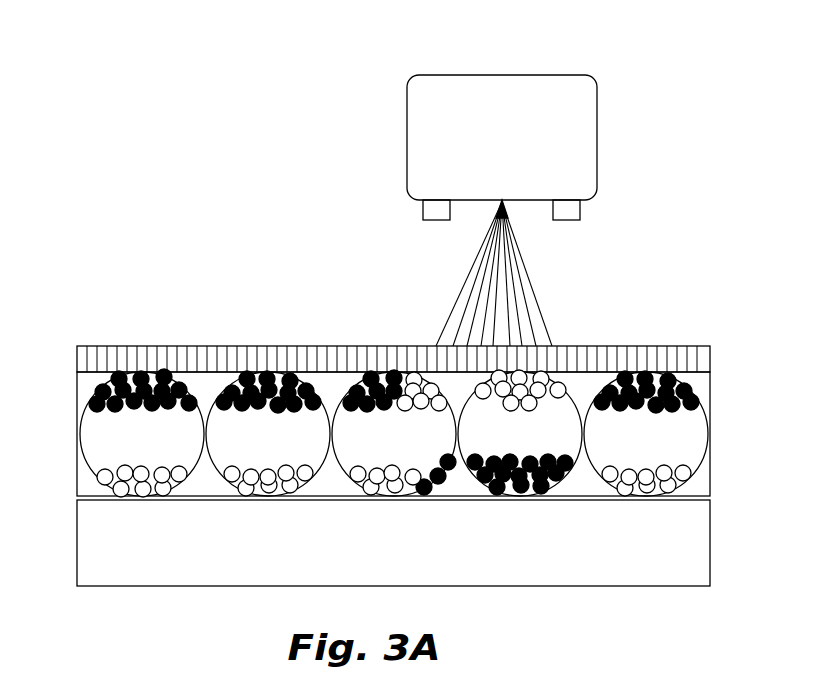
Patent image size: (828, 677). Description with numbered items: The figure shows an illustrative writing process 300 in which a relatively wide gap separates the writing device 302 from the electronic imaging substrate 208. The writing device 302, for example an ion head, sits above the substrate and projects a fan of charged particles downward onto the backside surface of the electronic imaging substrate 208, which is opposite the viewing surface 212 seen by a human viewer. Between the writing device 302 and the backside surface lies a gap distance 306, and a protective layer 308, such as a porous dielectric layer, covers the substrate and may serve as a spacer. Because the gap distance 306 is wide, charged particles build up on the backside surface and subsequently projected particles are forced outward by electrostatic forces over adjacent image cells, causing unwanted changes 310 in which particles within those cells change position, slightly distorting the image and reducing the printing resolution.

The writing process 300 is at (163, 141).
The writing device 302 is at (502, 210).
The gap distance 306 is at (623, 345).
The protective layer 308 is at (170, 346).
The unwanted changes 310 is at (426, 378).
The electronic imaging substrate 208 is at (70, 347).
The viewing surface 212 is at (393, 543).